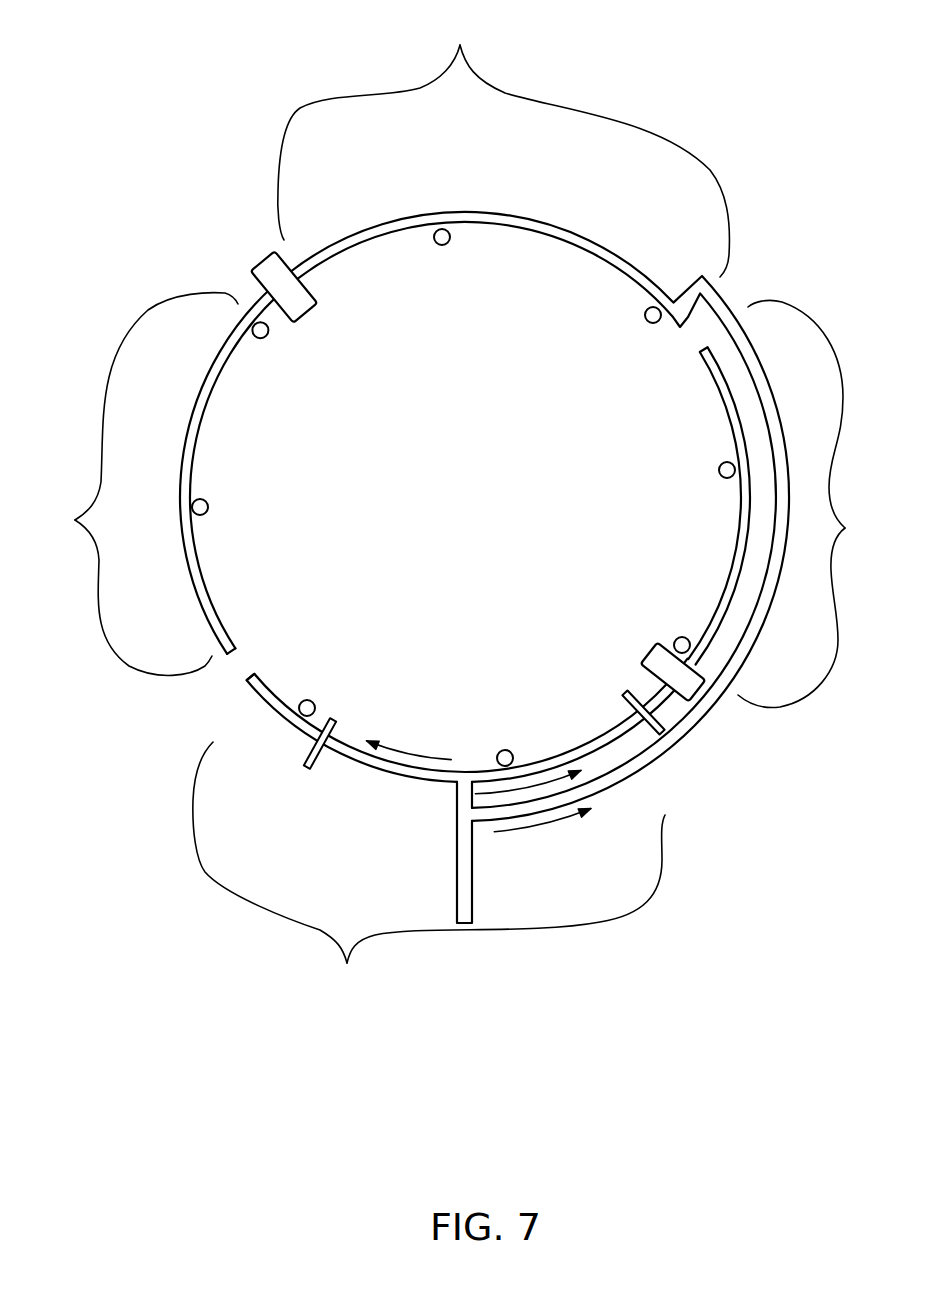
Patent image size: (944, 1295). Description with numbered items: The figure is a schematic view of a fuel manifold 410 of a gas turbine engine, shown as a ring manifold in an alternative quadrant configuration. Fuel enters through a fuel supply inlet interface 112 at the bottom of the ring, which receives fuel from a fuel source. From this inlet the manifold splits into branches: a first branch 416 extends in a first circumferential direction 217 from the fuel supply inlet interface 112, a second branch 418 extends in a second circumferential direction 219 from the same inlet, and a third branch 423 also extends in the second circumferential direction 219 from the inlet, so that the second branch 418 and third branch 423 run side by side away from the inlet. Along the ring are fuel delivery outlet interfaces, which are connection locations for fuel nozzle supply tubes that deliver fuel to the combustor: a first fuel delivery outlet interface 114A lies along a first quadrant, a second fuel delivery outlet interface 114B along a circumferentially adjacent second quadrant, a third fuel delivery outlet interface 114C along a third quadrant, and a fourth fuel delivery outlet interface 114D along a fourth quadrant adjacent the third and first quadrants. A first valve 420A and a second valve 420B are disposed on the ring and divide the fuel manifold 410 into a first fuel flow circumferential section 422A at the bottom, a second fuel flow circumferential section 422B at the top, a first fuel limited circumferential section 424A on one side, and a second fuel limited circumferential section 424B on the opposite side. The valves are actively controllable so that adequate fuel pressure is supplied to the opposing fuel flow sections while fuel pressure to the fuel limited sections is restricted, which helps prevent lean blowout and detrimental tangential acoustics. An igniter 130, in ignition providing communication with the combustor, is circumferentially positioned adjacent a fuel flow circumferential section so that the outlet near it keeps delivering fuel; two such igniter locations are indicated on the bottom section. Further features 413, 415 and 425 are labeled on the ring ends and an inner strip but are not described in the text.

The fuel manifold 410 is at (183, 135).
The fuel supply inlet interface 112 is at (460, 855).
The first fuel delivery outlet interface 114A is at (317, 690).
The second fuel delivery outlet interface 114B is at (272, 336).
The third fuel delivery outlet interface 114C is at (432, 258).
The fourth fuel delivery outlet interface 114D is at (710, 471).
The igniter 130 is at (327, 767).
The first circumferential direction 217 is at (407, 750).
The second circumferential direction 219 is at (523, 790).
The ring end 413 is at (250, 684).
The ring end 415 is at (226, 663).
The first branch 416 is at (433, 777).
The second branch 418 is at (537, 226).
The first valve 420A is at (255, 283).
The second valve 420B is at (656, 662).
The first fuel flow circumferential section 422A is at (429, 873).
The second fuel flow circumferential section 422B is at (504, 143).
The third branch 423 is at (558, 756).
The first fuel limited circumferential section 424A is at (128, 484).
The second fuel limited circumferential section 424B is at (824, 503).
The inner strip 425 is at (703, 351).